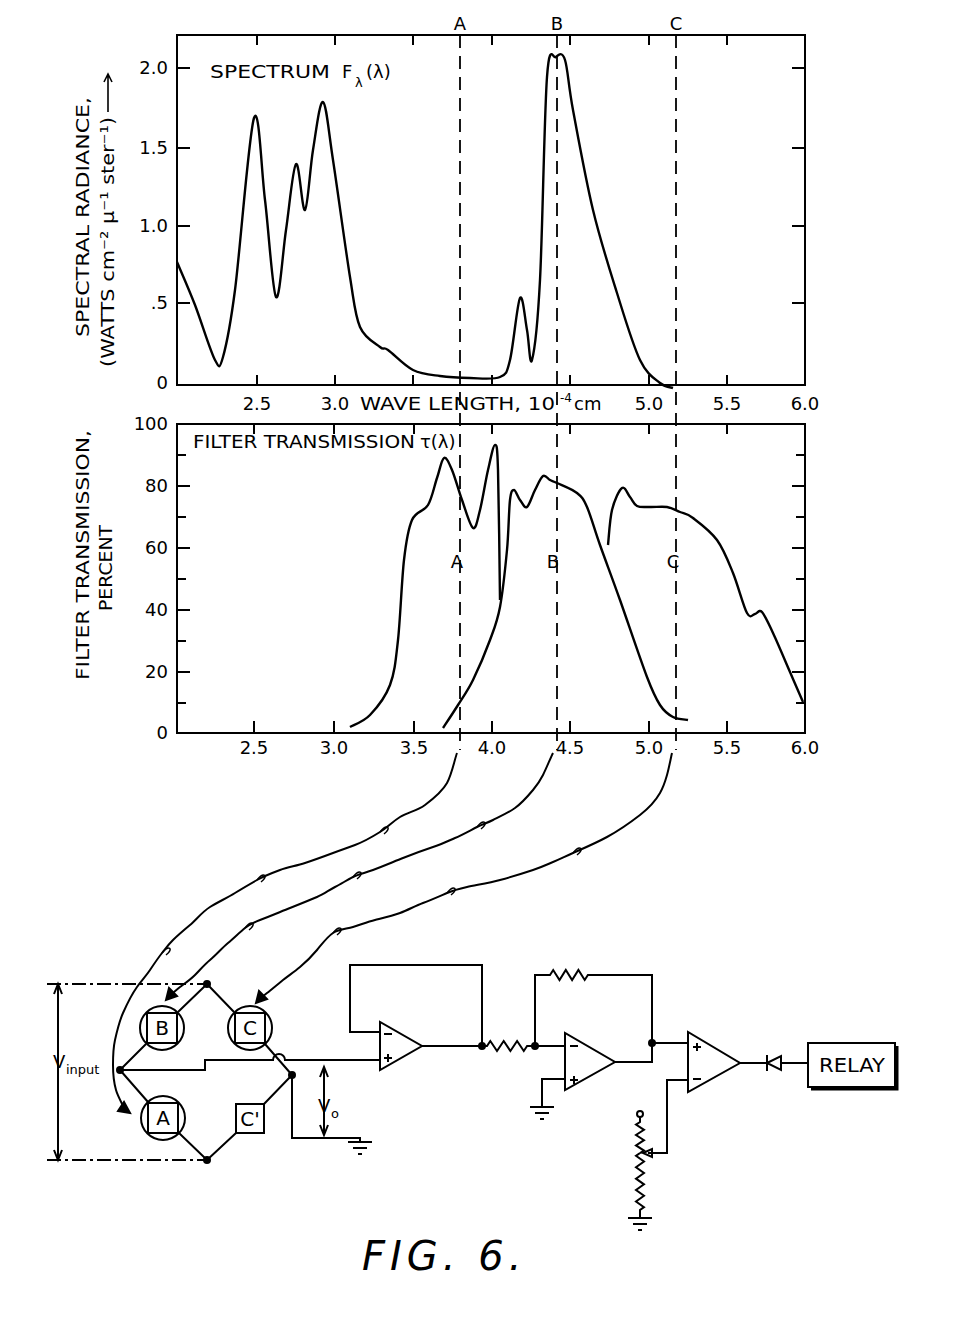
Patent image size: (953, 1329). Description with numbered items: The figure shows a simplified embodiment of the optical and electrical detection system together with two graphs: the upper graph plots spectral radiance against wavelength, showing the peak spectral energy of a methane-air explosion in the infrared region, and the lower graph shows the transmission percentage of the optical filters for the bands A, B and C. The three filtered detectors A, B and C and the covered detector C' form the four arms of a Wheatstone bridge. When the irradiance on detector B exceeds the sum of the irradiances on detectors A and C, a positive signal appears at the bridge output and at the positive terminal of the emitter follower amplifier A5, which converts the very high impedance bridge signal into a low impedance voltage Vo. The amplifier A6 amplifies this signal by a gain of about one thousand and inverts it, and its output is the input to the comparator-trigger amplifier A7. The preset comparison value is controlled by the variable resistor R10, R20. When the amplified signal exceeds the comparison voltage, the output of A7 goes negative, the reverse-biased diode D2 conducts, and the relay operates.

The emitter follower amplifier A5 is at (457, 1025).
The amplifier A6 is at (609, 1044).
The comparator-trigger operational amplifier A7 is at (720, 1070).
The diode D2 is at (787, 1080).
The variable resistor R10 is at (621, 1129).
The variable resistor R20 is at (625, 1191).